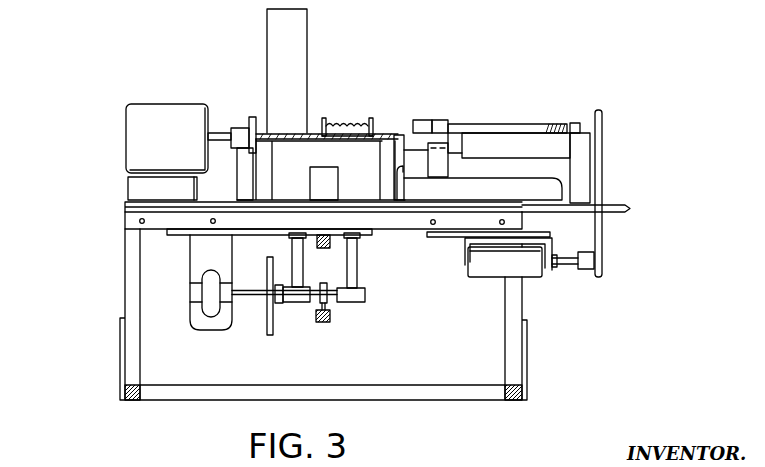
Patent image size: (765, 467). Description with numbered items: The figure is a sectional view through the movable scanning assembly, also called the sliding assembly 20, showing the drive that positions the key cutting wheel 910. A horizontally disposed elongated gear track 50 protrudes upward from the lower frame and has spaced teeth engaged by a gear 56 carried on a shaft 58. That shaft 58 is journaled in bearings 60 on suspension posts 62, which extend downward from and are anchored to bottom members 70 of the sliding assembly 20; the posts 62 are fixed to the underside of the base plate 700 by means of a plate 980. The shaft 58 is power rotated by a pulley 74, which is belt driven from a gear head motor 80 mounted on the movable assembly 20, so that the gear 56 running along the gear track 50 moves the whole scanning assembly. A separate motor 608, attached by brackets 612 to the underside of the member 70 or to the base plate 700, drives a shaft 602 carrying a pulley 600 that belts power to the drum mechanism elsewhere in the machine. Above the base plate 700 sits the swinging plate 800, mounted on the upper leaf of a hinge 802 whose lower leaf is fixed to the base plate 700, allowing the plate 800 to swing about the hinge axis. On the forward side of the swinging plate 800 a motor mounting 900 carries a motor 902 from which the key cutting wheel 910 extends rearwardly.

The sliding assembly 20 is at (124, 223).
The gear track 50 is at (325, 323).
The gear 56 is at (326, 300).
The shaft 58 is at (248, 290).
The bearings 60 is at (363, 299).
The suspension posts 62 is at (353, 282).
The bottom members 70 is at (151, 232).
The pulley 74 is at (270, 332).
The gear head motor 80 is at (190, 326).
The pulley 600 is at (602, 263).
The shaft 602 is at (568, 266).
The motor 608 is at (495, 270).
The brackets 612 is at (461, 243).
The base plate 700 is at (125, 209).
The swinging plate 800 is at (128, 197).
The hinge 802 is at (634, 210).
The motor mounting 900 is at (155, 200).
The motor 902 is at (148, 134).
The key cutting wheel 910 is at (248, 120).
The plate 980 is at (362, 235).